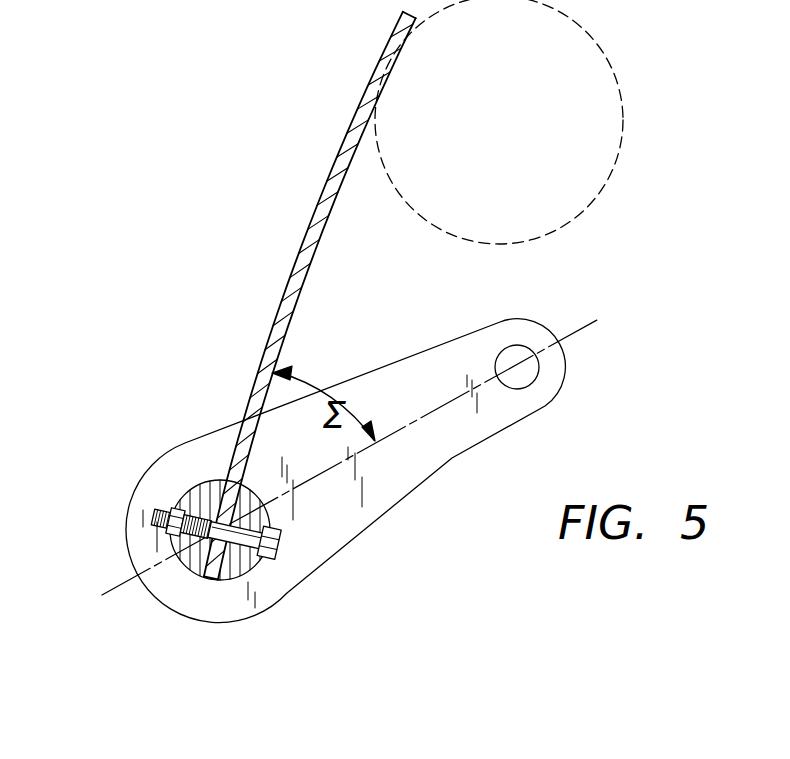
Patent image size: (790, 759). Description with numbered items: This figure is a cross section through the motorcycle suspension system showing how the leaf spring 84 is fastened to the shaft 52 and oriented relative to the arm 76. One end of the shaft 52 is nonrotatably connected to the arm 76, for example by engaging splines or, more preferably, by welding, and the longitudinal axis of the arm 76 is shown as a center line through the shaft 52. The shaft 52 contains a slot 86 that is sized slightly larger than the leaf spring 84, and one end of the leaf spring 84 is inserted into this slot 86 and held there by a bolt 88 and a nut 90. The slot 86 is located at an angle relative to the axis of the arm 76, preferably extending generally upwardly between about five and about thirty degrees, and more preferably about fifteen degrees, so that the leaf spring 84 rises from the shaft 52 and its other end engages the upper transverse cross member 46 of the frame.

The upper transverse cross member 46 is at (625, 123).
The arm 76 is at (505, 325).
The leaf spring 84 is at (258, 378).
The shaft 52 is at (270, 515).
The slot 86 is at (200, 573).
The bolt 88 is at (273, 550).
The nut 90 is at (170, 528).